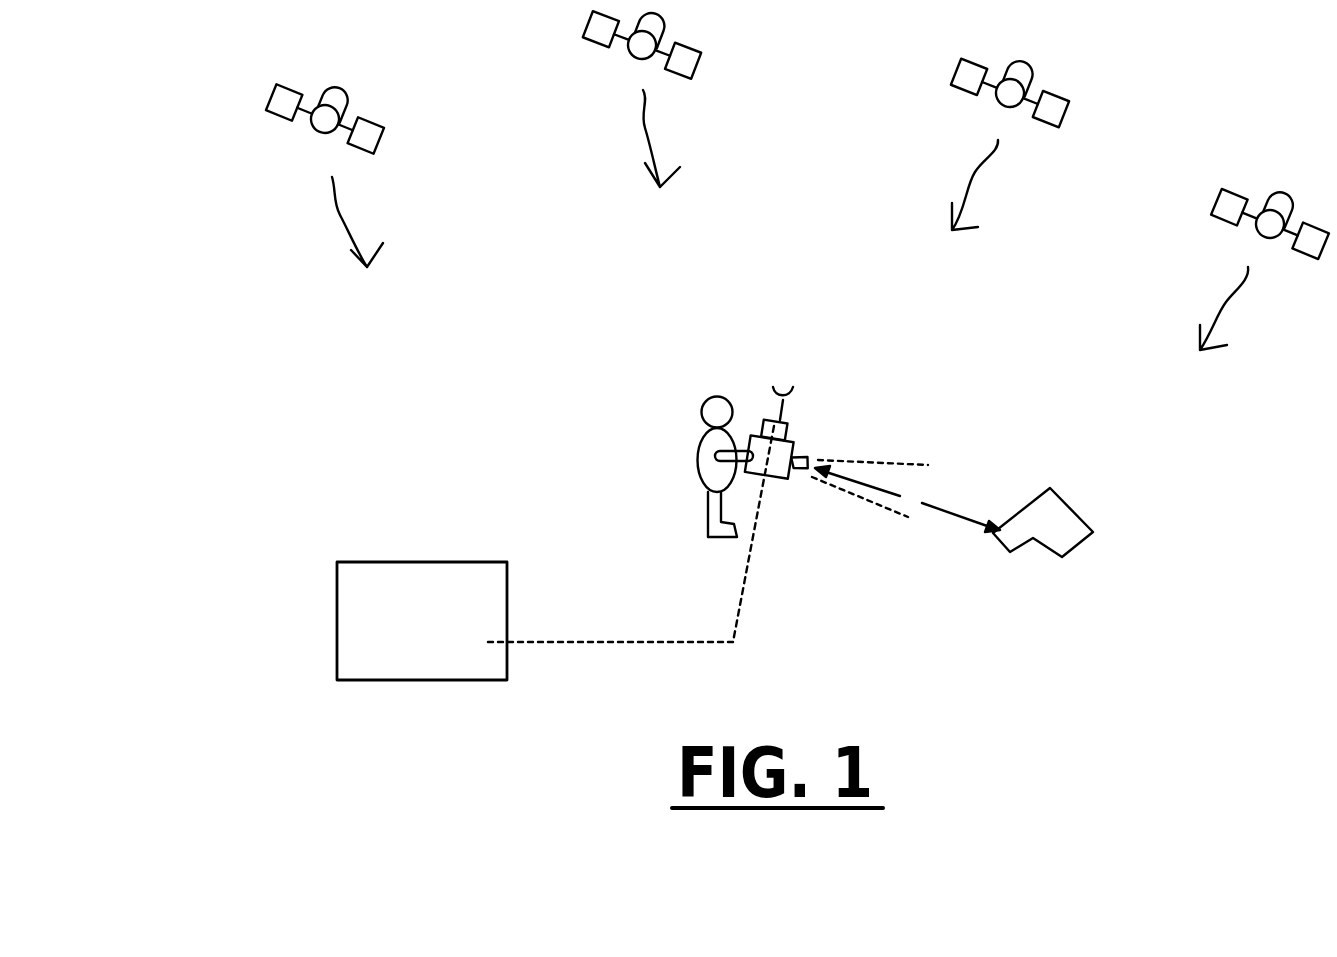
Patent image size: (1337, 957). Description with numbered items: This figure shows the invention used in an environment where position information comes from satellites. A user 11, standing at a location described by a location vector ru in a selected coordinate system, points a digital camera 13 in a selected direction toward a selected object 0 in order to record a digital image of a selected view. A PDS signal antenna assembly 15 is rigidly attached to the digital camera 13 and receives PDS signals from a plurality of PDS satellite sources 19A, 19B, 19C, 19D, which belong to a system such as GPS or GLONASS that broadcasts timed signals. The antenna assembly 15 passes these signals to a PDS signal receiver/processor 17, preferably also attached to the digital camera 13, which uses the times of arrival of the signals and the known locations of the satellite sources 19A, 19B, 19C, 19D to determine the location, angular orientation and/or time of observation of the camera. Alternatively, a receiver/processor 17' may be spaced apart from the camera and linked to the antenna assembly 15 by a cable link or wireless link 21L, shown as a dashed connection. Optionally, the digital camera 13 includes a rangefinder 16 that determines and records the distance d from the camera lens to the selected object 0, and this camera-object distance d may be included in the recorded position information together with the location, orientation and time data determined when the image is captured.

The user 11 is at (707, 475).
The digital camera 13 is at (747, 473).
The PDS signal antenna assembly 15 is at (787, 408).
The rangefinder 16 is at (859, 492).
The PDS signal receiver/processor 17 is at (737, 397).
The DDS receiver/processor 17' is at (389, 611).
The PDS satellite source 19A is at (323, 120).
The PDS satellite source 19B is at (641, 47).
The PDS satellite source 19C is at (1008, 94).
The PDS satellite source 19D is at (1268, 224).
The cable link or wireless link 21L is at (577, 645).
The selected object 0 is at (1073, 523).
The distance d is at (907, 499).
The location vector ru is at (857, 438).